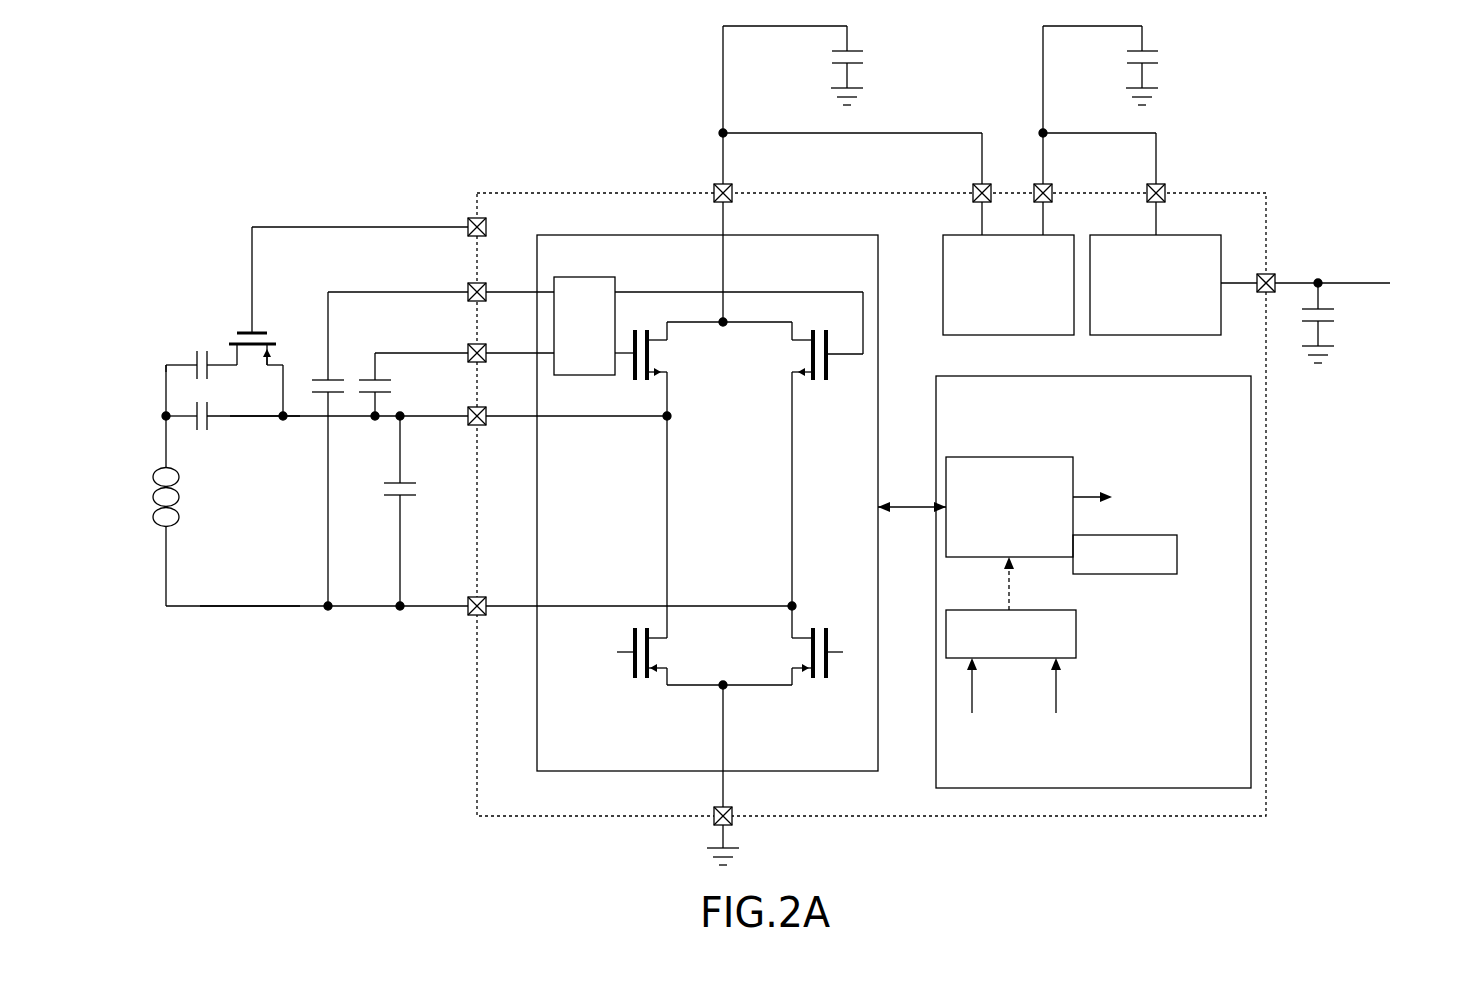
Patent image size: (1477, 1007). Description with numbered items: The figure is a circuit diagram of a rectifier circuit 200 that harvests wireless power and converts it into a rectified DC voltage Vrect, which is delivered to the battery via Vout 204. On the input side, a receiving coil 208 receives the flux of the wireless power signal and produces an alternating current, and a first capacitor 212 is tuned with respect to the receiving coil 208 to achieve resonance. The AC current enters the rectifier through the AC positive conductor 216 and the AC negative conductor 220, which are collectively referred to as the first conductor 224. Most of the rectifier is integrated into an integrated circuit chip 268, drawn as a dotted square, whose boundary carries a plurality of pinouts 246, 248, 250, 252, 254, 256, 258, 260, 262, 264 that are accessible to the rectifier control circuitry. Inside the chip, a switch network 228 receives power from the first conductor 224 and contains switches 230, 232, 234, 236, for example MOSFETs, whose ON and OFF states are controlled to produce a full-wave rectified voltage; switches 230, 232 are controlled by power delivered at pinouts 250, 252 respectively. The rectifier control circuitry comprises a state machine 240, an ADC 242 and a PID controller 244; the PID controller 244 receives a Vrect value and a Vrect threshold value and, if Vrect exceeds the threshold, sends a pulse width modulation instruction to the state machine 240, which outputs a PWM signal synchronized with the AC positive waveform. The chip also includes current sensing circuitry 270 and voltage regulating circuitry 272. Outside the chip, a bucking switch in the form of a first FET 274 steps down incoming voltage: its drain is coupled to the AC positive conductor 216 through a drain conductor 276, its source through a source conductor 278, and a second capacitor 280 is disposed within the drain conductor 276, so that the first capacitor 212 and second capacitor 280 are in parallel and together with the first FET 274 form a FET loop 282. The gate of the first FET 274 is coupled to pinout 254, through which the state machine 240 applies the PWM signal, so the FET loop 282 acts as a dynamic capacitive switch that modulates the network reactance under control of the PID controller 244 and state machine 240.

The rectifier circuit 200 is at (281, 107).
The Vout 204 is at (1385, 297).
The receiving coil 208 is at (141, 485).
The first capacitor 212 is at (194, 430).
The AC positive conductor 216 is at (245, 421).
The AC negative conductor 220 is at (250, 592).
The first conductor 224 is at (479, 511).
The switch network 228 is at (707, 521).
The switch 230 is at (644, 369).
The switch 232 is at (815, 464).
The switch 234 is at (642, 559).
The switch 236 is at (817, 654).
The state machine 240 is at (1096, 507).
The ADC 242 is at (1125, 554).
The PID controller 244 is at (1015, 653).
The pinout 246 is at (473, 598).
The pinout 248 is at (475, 408).
The pinout 250 is at (464, 345).
The pinout 252 is at (441, 284).
The pinout 254 is at (389, 229).
The pinout 256 is at (848, 174).
The pinout 258 is at (853, 502).
The pinout 260 is at (1096, 130).
The pinout 262 is at (1176, 184).
The pinout 264 is at (1269, 292).
The integrated circuit chip 268 is at (592, 188).
The current sensing circuitry 270 is at (1008, 285).
The voltage regulating circuitry 272 is at (1155, 285).
The first FET 274 is at (244, 317).
The drain conductor 276 is at (166, 385).
The source conductor 278 is at (279, 354).
The second capacitor 280 is at (193, 343).
The FET loop 282 is at (210, 385).